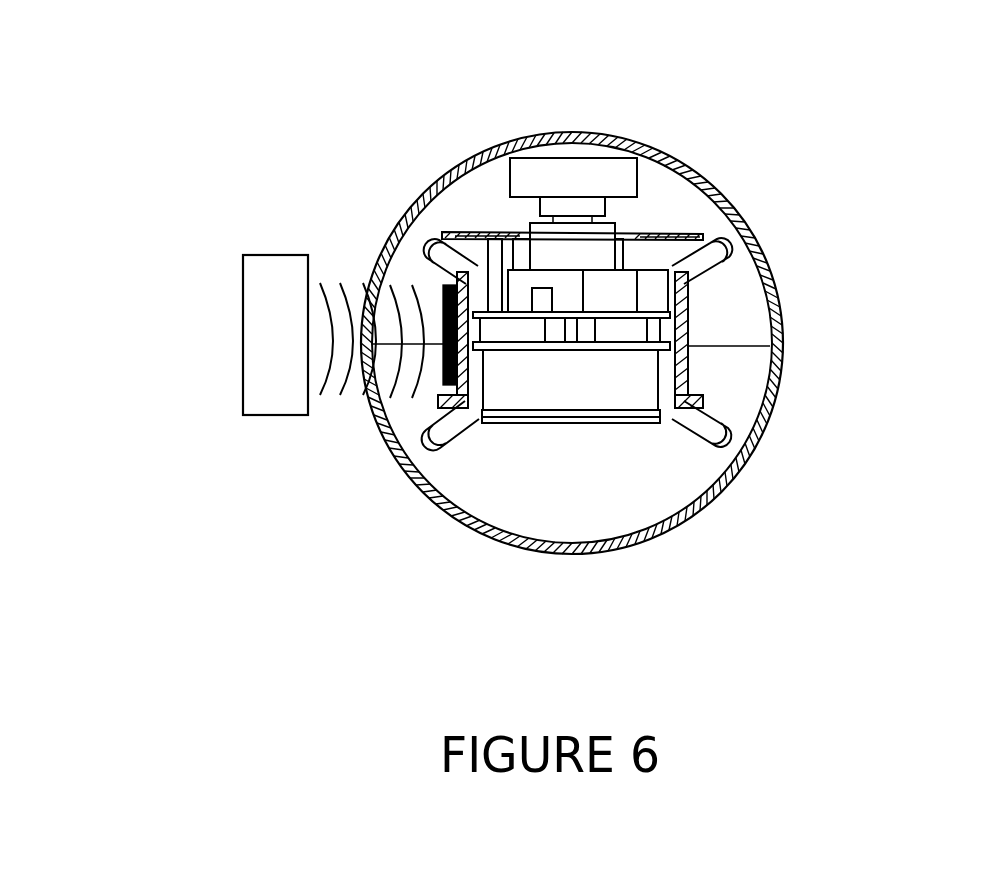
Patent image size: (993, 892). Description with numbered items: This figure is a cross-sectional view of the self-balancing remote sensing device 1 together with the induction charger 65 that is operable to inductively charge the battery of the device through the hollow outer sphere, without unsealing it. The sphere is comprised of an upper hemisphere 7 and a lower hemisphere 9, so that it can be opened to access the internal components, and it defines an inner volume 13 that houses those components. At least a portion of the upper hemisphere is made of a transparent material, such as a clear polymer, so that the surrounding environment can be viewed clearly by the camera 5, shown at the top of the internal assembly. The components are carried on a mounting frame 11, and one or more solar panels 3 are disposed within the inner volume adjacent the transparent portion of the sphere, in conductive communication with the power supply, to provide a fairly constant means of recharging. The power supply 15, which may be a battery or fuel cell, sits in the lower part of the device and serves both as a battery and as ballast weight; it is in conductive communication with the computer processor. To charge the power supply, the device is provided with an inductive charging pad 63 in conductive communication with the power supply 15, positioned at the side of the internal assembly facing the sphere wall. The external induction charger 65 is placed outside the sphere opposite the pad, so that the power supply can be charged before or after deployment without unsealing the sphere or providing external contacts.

The self-balancing remote sensing device 1 is at (667, 350).
The solar panels 3 is at (468, 230).
The camera 5 is at (565, 170).
The upper hemisphere 7 is at (785, 313).
The lower hemisphere 9 is at (747, 460).
The mounting frame 11 is at (685, 367).
The inner volume 13 is at (515, 477).
The power supply 15 is at (597, 402).
The inductive charging pad 63 is at (443, 308).
The induction charger 65 is at (243, 350).